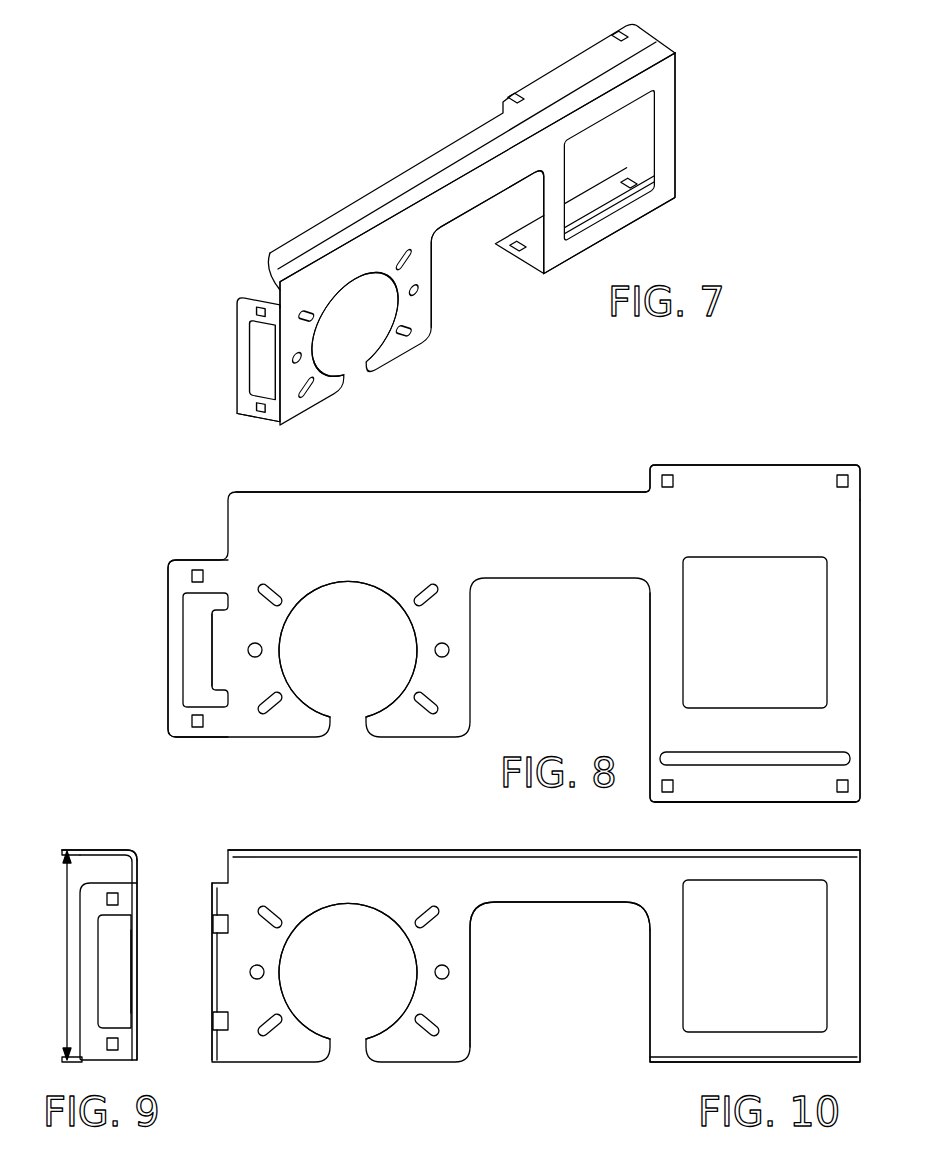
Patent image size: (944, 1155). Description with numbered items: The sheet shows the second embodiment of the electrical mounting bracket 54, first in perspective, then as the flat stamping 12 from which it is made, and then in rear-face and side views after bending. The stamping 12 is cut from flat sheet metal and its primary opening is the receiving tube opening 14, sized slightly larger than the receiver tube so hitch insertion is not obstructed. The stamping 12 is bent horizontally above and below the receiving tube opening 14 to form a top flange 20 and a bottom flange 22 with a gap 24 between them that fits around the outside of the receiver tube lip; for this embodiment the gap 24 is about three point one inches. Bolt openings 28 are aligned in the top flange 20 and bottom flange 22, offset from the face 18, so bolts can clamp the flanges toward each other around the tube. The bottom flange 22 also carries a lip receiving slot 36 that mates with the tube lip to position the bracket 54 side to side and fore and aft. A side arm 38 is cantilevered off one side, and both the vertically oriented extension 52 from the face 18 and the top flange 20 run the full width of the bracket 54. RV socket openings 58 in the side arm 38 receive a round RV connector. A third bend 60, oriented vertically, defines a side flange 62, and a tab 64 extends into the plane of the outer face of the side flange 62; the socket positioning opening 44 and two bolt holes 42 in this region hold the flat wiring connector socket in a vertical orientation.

In FIG. 8, the stamping 12 is at (587, 550).
In FIG. 7, the receiving tube opening 14 is at (628, 138).
In FIG. 8, the receiving tube opening 14 is at (742, 638).
In FIG. 10, the receiving tube opening 14 is at (752, 970).
In FIG. 7, the face 18 is at (663, 177).
In FIG. 8, the face 18 is at (672, 615).
In FIG. 9, the face 18 is at (137, 890).
In FIG. 10, the face 18 is at (663, 972).
In FIG. 7, the top flange 20 is at (612, 68).
In FIG. 8, the top flange 20 is at (541, 515).
In FIG. 9, the top flange 20 is at (100, 848).
In FIG. 7, the bottom flange 22 is at (530, 231).
In FIG. 8, the bottom flange 22 is at (705, 785).
In FIG. 9, the bottom flange 22 is at (73, 1062).
In FIG. 9, the gap 24 is at (60, 955).
In FIG. 7, the bolt openings 28 is at (628, 33).
In FIG. 8, the bolt openings 28 is at (848, 470).
In FIG. 7, the lip receiving slot 36 is at (603, 218).
In FIG. 8, the lip receiving slot 36 is at (713, 755).
In FIG. 7, the side arm 38 is at (382, 216).
In FIG. 8, the side arm 38 is at (425, 527).
In FIG. 10, the side arm 38 is at (315, 887).
In FIG. 7, the bolt holes 42 is at (252, 417).
In FIG. 8, the bolt holes 42 is at (193, 718).
In FIG. 9, the bolt holes 42 is at (118, 900).
In FIG. 10, the bolt holes 42 is at (220, 972).
In FIG. 7, the socket positioning opening 44 is at (288, 423).
In FIG. 8, the socket positioning opening 44 is at (222, 600).
In FIG. 9, the socket positioning opening 44 is at (113, 967).
In FIG. 7, the extension 52 is at (422, 230).
In FIG. 10, the extension 52 is at (560, 888).
In FIG. 7, the electrical mounting bracket 54 is at (298, 98).
In FIG. 9, the electrical mounting bracket 54 is at (138, 822).
In FIG. 10, the electrical mounting bracket 54 is at (400, 828).
In FIG. 7, the RV socket openings 58 is at (338, 353).
In FIG. 8, the RV socket openings 58 is at (348, 675).
In FIG. 10, the RV socket openings 58 is at (348, 998).
In FIG. 7, the third bend 60 is at (268, 427).
In FIG. 7, the side flange 62 is at (242, 305).
In FIG. 8, the side flange 62 is at (178, 568).
In FIG. 7, the tab 64 is at (280, 262).
In FIG. 8, the tab 64 is at (217, 653).
In FIG. 9, the tab 64 is at (132, 1003).
In FIG. 10, the tab 64 is at (223, 980).